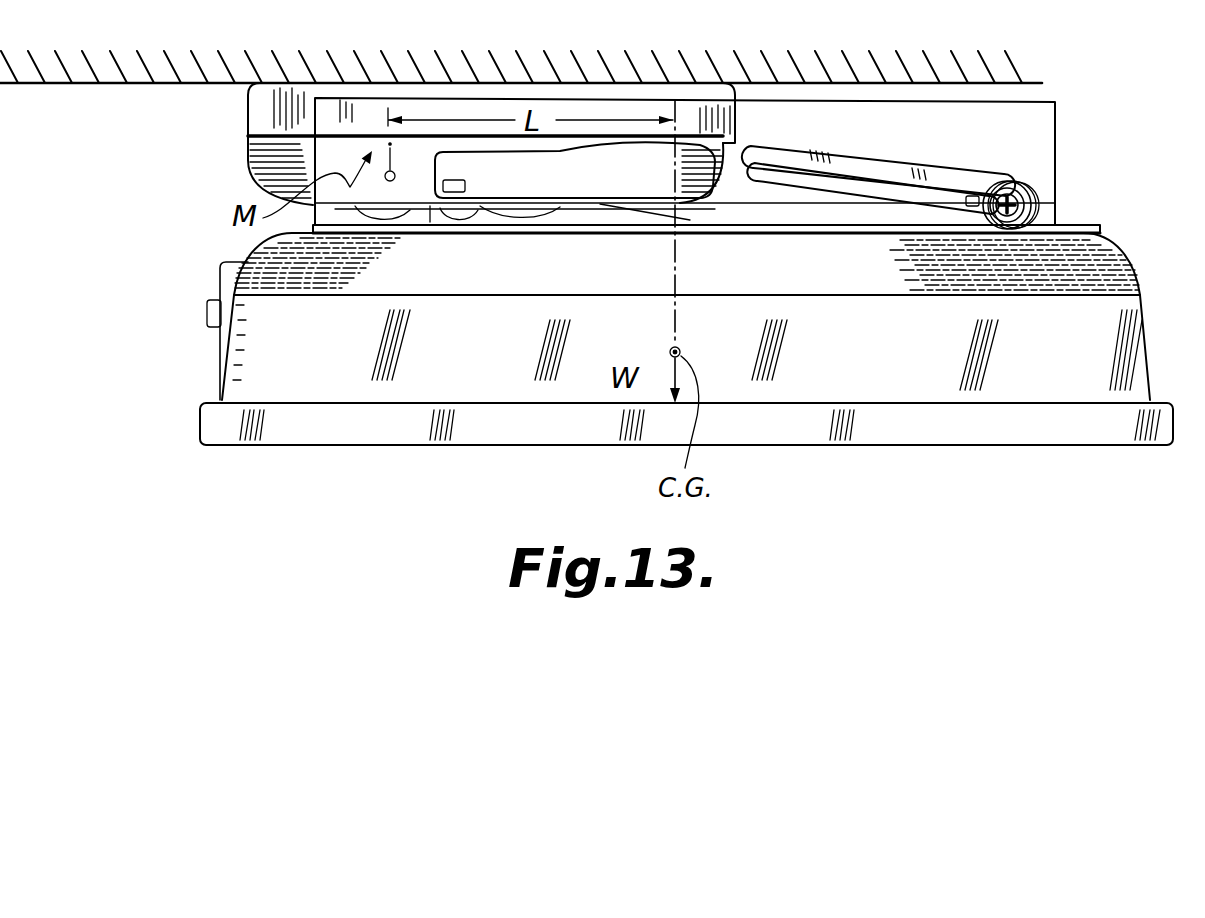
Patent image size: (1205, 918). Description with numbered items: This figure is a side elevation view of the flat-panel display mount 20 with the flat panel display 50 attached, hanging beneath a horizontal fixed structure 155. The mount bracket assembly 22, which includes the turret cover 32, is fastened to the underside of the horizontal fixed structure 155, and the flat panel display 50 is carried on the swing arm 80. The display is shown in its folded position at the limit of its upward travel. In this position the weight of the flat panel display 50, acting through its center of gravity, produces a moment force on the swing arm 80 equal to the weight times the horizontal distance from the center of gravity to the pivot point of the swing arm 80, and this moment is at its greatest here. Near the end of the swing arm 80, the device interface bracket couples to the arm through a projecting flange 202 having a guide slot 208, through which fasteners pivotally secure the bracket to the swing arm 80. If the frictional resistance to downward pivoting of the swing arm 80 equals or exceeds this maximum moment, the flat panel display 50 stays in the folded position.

The horizontal fixed structure 155 is at (152, 84).
The mount bracket assembly 22 is at (252, 114).
The turret cover 32 is at (255, 180).
The swing arm 80 is at (712, 198).
The guide slot 208 is at (968, 182).
The projecting flange 202 is at (1030, 181).
The flat-panel display mount 20 is at (1008, 205).
The flat panel display 50 is at (893, 447).